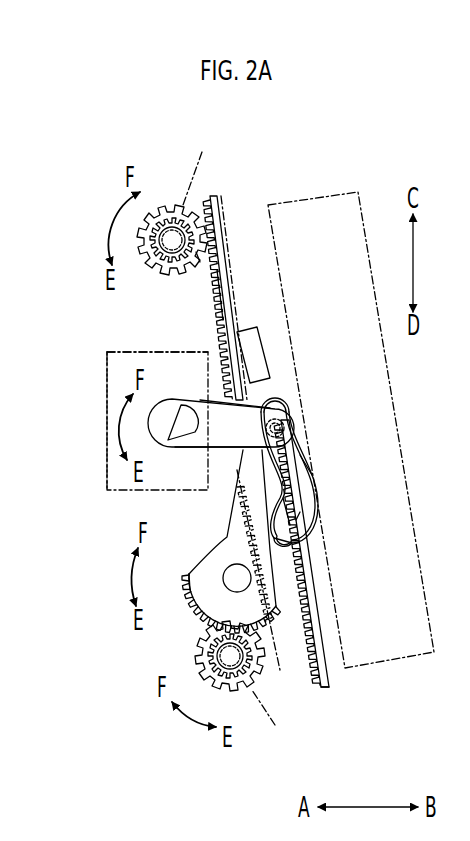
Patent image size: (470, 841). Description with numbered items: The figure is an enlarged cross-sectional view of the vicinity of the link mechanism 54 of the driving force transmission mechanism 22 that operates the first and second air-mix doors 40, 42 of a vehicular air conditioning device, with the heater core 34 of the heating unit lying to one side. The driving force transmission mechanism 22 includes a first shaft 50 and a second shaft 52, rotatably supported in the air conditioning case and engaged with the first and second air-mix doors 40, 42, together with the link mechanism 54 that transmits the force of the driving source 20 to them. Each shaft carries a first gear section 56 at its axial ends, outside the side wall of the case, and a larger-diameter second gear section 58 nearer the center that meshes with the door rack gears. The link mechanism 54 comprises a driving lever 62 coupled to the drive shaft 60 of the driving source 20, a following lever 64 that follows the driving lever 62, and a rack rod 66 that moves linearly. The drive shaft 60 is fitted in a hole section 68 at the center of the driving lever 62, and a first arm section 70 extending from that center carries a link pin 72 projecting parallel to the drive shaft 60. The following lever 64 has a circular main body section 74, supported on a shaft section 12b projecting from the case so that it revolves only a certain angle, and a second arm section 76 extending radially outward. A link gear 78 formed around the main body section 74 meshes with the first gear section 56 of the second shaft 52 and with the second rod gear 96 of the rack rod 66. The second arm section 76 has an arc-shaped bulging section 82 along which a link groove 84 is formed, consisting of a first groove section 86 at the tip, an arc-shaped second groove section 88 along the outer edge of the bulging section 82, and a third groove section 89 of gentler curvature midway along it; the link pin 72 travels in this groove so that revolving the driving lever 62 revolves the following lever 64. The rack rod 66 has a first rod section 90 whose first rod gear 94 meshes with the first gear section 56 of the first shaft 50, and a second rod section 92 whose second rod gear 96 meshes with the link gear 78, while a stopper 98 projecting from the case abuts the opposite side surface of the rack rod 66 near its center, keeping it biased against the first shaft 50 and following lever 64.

The shaft section 12b is at (228, 570).
The driving source 20 is at (108, 462).
The driving force transmission mechanism 22 is at (78, 400).
The heater core 34 is at (322, 190).
The first air-mix door 40 is at (223, 192).
The second air-mix door 42 is at (318, 583).
The first shaft 50 is at (201, 441).
The second shaft 52 is at (238, 699).
The link mechanism 54 is at (128, 342).
The first gear section 56 is at (165, 218).
The second gear section 58 is at (234, 441).
The drive shaft 60 is at (218, 419).
The driving lever 62 is at (183, 458).
The following lever 64 is at (305, 455).
The rack rod 66 is at (320, 595).
The hole section 68 is at (197, 427).
The first arm section 70 is at (222, 410).
The link pin 72 is at (292, 414).
The main body section 74 is at (214, 547).
The second arm section 76 is at (232, 478).
The link gear 78 is at (190, 590).
The bulging section 82 is at (354, 461).
The link groove 84 is at (310, 528).
The first groove section 86 is at (277, 396).
The second groove section 88 is at (327, 548).
The third groove section 89 is at (300, 512).
The first rod section 90 is at (224, 290).
The second rod section 92 is at (330, 690).
The first rod gear 94 is at (200, 273).
The second rod gear 96 is at (292, 628).
The stopper 98 is at (266, 340).